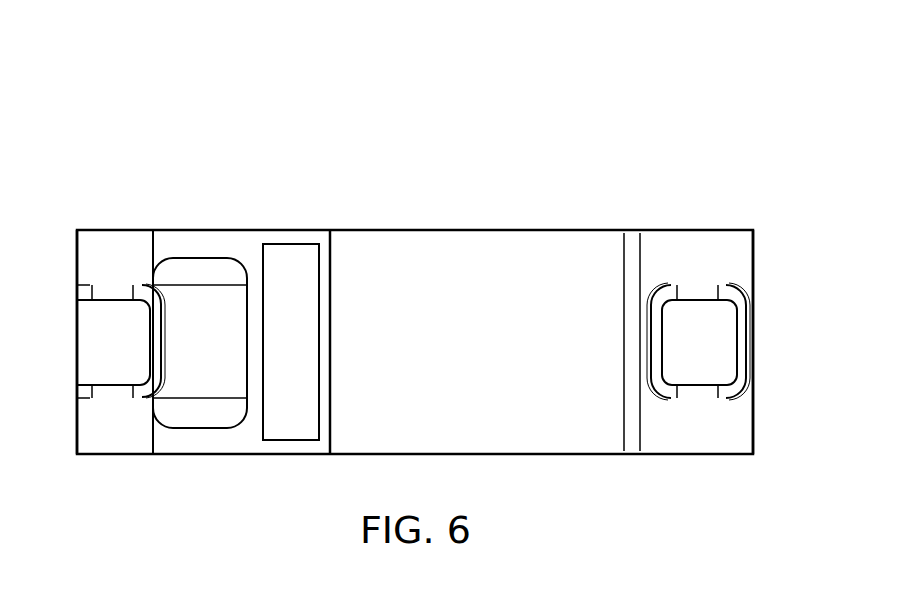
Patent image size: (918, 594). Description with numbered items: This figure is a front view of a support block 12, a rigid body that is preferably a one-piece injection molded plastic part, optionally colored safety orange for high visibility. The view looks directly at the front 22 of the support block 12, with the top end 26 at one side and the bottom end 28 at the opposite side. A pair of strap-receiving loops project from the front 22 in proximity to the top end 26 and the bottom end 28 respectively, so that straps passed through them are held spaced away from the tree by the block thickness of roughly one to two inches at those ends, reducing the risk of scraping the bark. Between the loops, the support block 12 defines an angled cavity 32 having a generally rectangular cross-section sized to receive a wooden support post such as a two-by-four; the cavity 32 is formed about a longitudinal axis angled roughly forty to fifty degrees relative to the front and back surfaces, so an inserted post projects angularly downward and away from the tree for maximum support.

The support block 12 is at (327, 126).
The front 22 is at (534, 248).
The top end 26 is at (755, 250).
The bottom end 28 is at (75, 250).
The angled cavity 32 is at (295, 253).